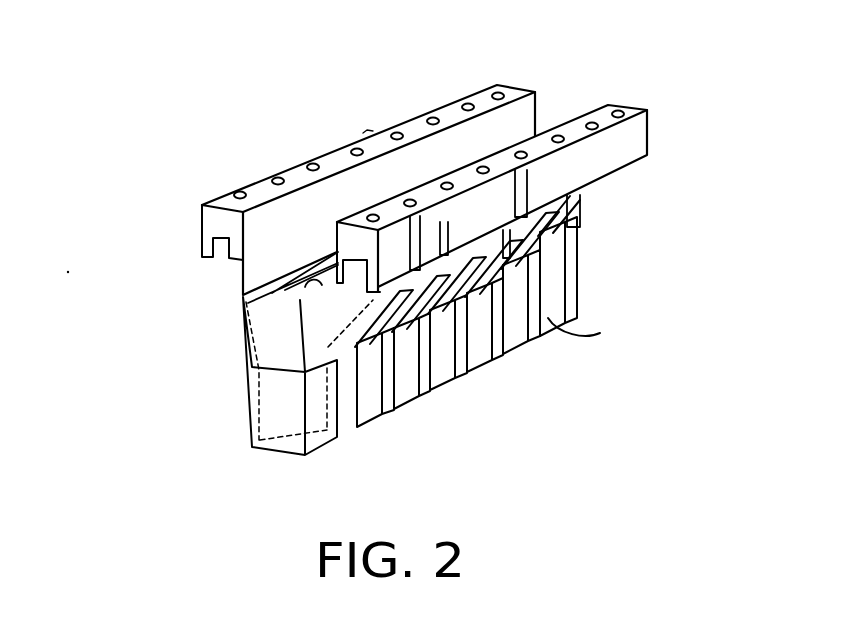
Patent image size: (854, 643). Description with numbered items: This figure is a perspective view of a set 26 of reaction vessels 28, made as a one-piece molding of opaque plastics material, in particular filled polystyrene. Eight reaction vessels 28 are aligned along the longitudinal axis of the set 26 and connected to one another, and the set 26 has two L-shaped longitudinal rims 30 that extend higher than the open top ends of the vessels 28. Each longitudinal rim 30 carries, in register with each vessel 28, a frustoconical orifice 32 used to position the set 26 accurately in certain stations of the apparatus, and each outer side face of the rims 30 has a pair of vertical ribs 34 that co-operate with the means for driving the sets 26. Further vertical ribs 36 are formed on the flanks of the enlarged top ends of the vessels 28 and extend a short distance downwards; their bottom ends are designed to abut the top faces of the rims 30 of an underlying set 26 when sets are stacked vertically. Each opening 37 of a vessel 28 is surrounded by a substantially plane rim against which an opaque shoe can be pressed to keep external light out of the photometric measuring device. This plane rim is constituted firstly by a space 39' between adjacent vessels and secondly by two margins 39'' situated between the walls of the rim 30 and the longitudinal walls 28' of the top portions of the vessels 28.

The set of reaction vessels 26 is at (327, 128).
The reaction vessel 28 is at (408, 325).
The longitudinal wall 28' is at (240, 280).
The longitudinal rim 30 is at (203, 233).
The frustoconical orifice 32 is at (278, 180).
The vertical rib 34 is at (465, 100).
The vertical rib 36 is at (582, 208).
The opening 37 is at (335, 313).
The space between vessels 39' is at (221, 325).
The margin 39'' is at (288, 178).